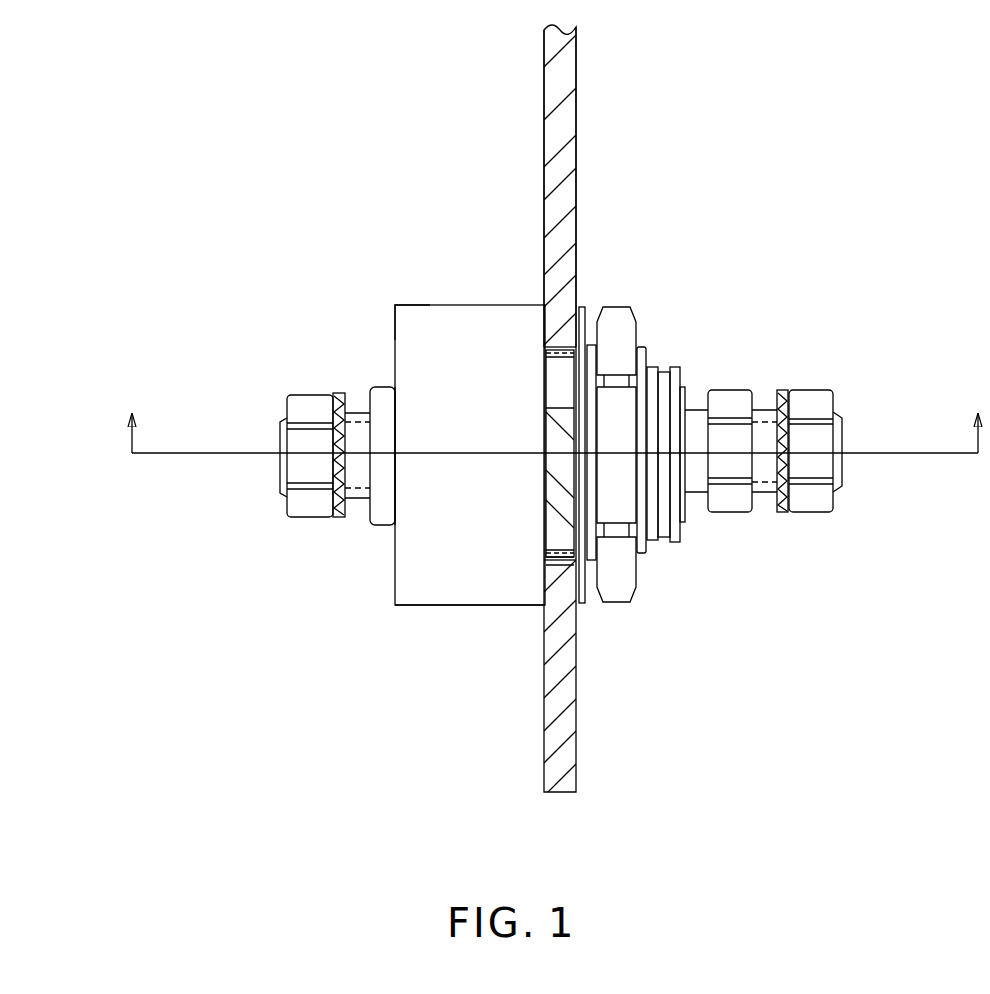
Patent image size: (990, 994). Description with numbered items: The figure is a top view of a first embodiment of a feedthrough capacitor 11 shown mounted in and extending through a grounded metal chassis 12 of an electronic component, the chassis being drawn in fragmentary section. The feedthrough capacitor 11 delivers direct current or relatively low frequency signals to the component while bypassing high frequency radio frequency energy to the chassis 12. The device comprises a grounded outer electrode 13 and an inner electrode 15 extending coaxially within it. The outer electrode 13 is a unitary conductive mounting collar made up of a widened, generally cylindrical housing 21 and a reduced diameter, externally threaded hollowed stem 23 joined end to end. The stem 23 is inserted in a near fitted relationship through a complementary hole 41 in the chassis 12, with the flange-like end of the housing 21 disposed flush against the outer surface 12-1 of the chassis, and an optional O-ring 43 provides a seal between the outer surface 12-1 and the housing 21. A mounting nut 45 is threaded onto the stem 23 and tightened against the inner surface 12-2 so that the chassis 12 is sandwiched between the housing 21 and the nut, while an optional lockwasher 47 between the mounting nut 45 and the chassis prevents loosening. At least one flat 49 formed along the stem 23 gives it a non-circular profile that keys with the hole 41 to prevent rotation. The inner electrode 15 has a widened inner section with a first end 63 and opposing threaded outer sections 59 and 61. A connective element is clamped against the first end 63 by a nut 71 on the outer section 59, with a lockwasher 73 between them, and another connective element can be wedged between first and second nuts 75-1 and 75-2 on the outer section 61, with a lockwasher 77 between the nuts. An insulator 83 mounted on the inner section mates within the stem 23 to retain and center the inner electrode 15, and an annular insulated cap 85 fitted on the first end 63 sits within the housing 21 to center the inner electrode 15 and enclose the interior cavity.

The feedthrough capacitor 11 is at (397, 650).
The grounded metal chassis 12 is at (567, 784).
The outer surface 12-1 is at (543, 98).
The inner surface 12-2 is at (577, 122).
The outer electrode 13 is at (462, 305).
The inner electrode 15 is at (378, 379).
The housing 21 is at (492, 606).
The stem 23 is at (644, 347).
The hole 41 is at (559, 568).
The O-ring 43 is at (548, 349).
The mounting nut 45 is at (630, 606).
The lockwasher 47 is at (588, 606).
The flat 49 is at (590, 307).
The outer section 59 is at (349, 504).
The outer section 61 is at (766, 494).
The first end 63 is at (362, 393).
The nut 71 is at (307, 518).
The lockwasher 73 is at (342, 516).
The first nut 75-1 is at (732, 389).
The second nut 75-2 is at (813, 389).
The lockwasher 77 is at (781, 391).
The insulator 83 is at (676, 543).
The insulated cap 85 is at (390, 334).